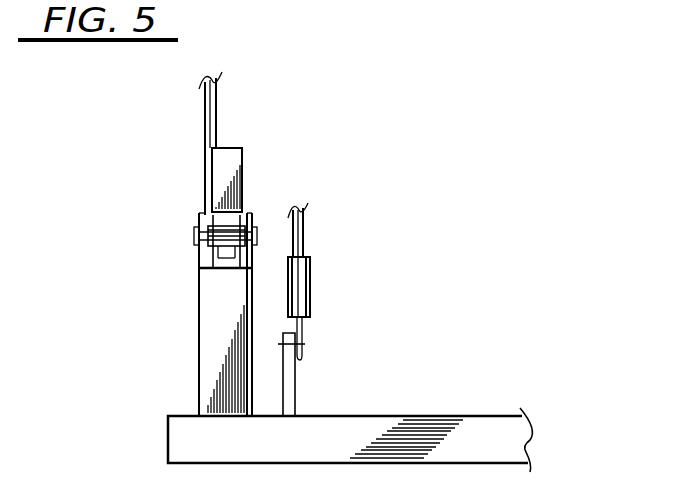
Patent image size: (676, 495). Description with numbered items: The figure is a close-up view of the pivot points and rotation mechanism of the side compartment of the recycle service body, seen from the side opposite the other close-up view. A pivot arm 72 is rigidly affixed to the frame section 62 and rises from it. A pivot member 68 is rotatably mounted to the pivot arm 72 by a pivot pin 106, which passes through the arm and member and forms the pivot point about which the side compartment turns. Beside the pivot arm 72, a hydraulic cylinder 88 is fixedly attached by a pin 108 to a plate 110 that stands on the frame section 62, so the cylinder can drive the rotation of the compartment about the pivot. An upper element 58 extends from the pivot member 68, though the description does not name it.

The rod 58 is at (210, 113).
The pivot member 68 is at (238, 168).
The pivot pin 106 is at (194, 236).
The pivot arm 72 is at (215, 357).
The hydraulic cylinder 88 is at (310, 283).
The pin 108 is at (305, 343).
The plate 110 is at (293, 397).
The frame section 62 is at (445, 423).